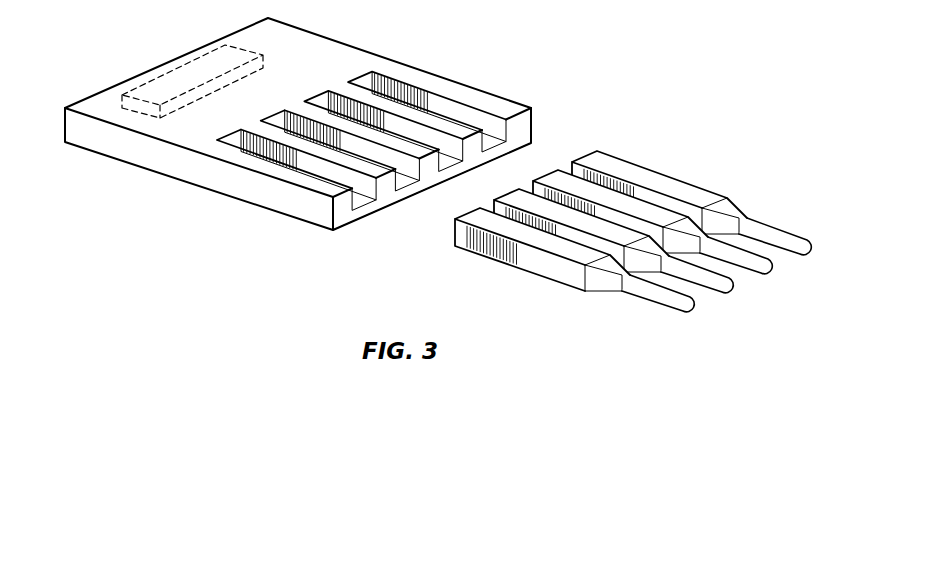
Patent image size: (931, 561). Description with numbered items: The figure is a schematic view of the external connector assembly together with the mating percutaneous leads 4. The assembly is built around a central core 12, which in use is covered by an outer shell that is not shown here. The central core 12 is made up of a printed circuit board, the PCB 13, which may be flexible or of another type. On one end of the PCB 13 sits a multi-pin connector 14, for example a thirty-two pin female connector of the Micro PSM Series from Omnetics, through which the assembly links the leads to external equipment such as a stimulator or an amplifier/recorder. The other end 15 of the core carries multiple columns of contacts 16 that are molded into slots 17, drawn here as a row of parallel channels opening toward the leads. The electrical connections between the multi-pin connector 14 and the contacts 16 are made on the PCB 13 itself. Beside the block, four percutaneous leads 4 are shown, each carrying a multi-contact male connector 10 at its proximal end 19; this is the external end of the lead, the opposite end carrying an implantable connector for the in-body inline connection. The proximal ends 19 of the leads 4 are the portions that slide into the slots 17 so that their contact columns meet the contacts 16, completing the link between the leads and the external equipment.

The multi-contact male connector 10 is at (633, 215).
The central core 12 is at (113, 158).
The printed circuit board 13 is at (63, 110).
The multi-pin connector 14 is at (258, 43).
The other end 15 is at (523, 127).
The contacts 16 is at (410, 87).
The slots 17 is at (295, 118).
The proximal end 19 is at (608, 163).
The percutaneous lead 4 is at (694, 305).